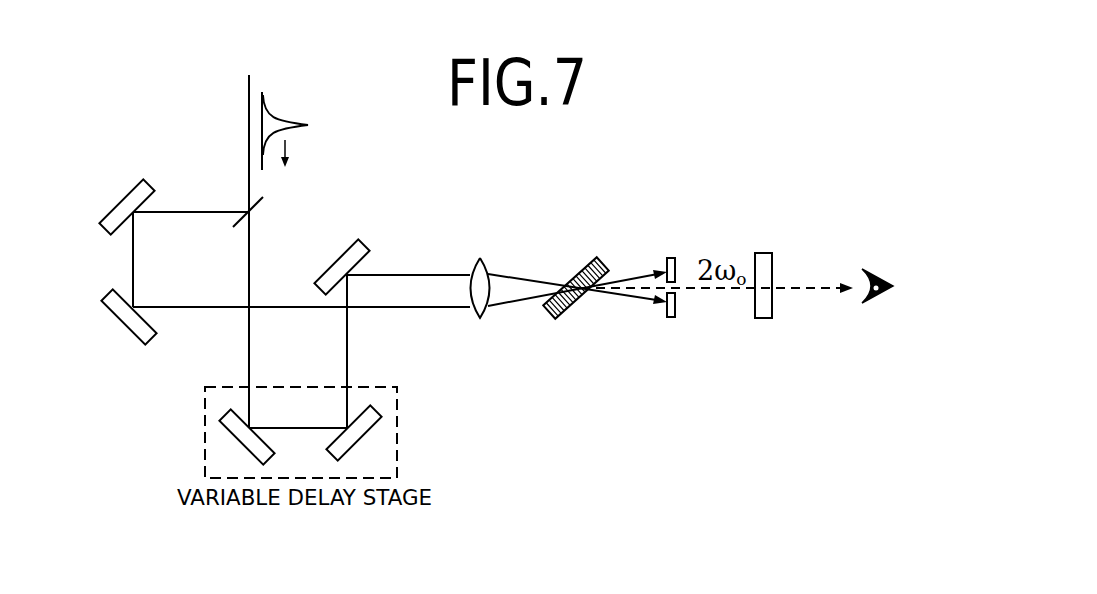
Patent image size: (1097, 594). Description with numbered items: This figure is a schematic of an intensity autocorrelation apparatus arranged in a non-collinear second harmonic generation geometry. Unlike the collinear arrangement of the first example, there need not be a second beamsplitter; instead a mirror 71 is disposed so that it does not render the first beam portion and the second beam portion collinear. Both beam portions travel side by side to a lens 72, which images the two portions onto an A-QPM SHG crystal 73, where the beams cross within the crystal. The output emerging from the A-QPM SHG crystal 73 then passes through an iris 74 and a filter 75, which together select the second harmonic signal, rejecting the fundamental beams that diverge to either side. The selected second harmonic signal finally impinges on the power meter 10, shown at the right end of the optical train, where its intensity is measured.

The mirror 71 is at (344, 252).
The lens 72 is at (480, 291).
The A-QPM SHG crystal 73 is at (582, 302).
The iris 74 is at (672, 287).
The filter 75 is at (770, 287).
The power meter 10 is at (868, 291).